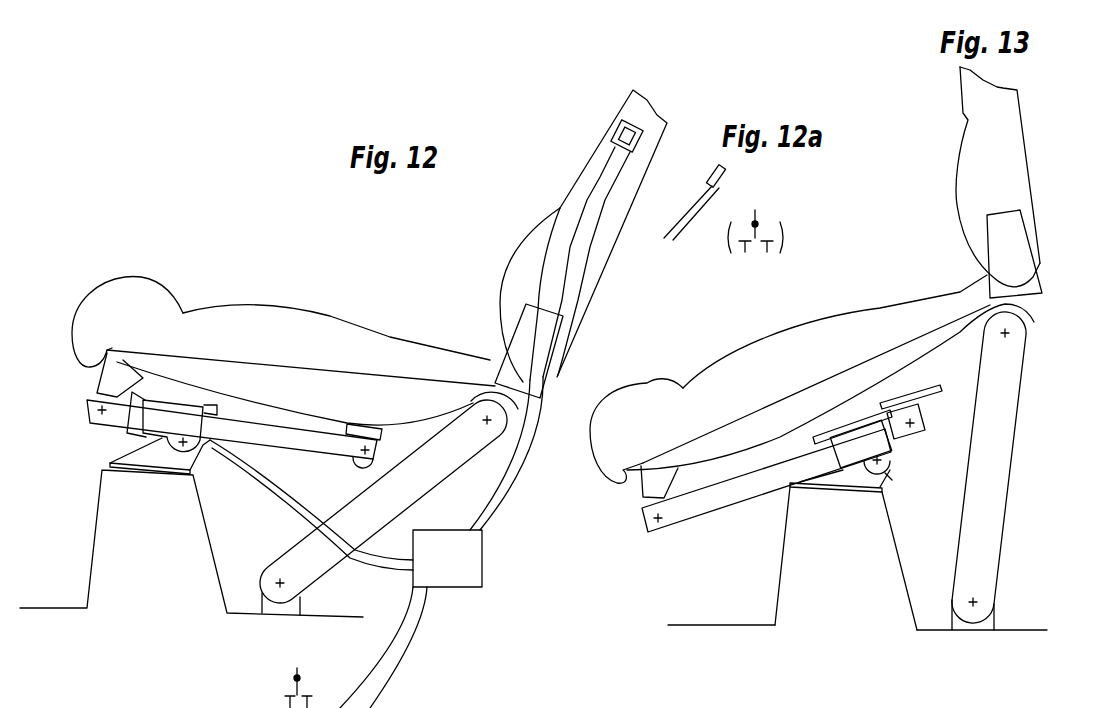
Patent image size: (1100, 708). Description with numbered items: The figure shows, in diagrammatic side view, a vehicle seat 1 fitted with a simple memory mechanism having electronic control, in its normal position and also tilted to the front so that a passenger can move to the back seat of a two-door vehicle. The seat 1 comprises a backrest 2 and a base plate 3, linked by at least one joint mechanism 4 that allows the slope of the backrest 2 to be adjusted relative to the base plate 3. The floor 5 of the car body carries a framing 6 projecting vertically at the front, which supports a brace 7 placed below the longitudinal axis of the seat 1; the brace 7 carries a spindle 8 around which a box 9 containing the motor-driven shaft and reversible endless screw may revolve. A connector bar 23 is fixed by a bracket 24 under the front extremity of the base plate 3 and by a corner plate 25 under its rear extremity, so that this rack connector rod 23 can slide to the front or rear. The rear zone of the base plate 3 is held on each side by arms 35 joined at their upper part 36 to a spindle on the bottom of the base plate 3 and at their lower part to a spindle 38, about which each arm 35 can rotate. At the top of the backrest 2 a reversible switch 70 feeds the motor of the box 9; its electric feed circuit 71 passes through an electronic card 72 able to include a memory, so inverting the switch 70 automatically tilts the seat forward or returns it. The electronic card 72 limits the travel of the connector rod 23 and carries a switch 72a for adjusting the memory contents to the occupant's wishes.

In FIG. 12, the seat 1 is at (486, 329).
In FIG. 13, the seat 1 is at (966, 273).
In FIG. 12, the backrest 2 is at (540, 240).
In FIG. 13, the backrest 2 is at (1010, 168).
In FIG. 12, the base plate 3 is at (320, 313).
In FIG. 13, the base plate 3 is at (836, 320).
In FIG. 12, the joint mechanism 4 is at (548, 345).
In FIG. 13, the joint mechanism 4 is at (1015, 243).
In FIG. 13, the floor 5 is at (1018, 632).
In FIG. 12, the framing 6 is at (96, 549).
In FIG. 13, the framing 6 is at (787, 590).
In FIG. 12, the brace 7 is at (158, 467).
In FIG. 13, the brace 7 is at (853, 490).
In FIG. 12, the spindle 8 is at (200, 452).
In FIG. 13, the spindle 8 is at (885, 473).
In FIG. 12, the box 9 is at (188, 414).
In FIG. 13, the box 9 is at (856, 425).
In FIG. 12, the connector bar 23 is at (255, 430).
In FIG. 13, the connector bar 23 is at (750, 494).
In FIG. 12, the bracket 24 is at (107, 382).
In FIG. 13, the bracket 24 is at (647, 497).
In FIG. 12, the corner plate 25 is at (390, 437).
In FIG. 13, the corner plate 25 is at (937, 405).
In FIG. 12, the arm 35 is at (376, 504).
In FIG. 13, the arm 35 is at (981, 470).
In FIG. 12, the upper part of arm 36 is at (488, 428).
In FIG. 13, the upper part of arm 36 is at (1012, 340).
In FIG. 12, the spindle 38 is at (290, 582).
In FIG. 13, the spindle 38 is at (985, 602).
In FIG. 12, the reversible switch 70 is at (641, 142).
In FIG. 12A, the reversible switch 70 is at (728, 182).
In FIG. 12, the electric feed circuit 71 is at (565, 235).
In FIG. 12, the electronic card 72 is at (474, 585).
In FIG. 12, the switch 72a is at (281, 684).